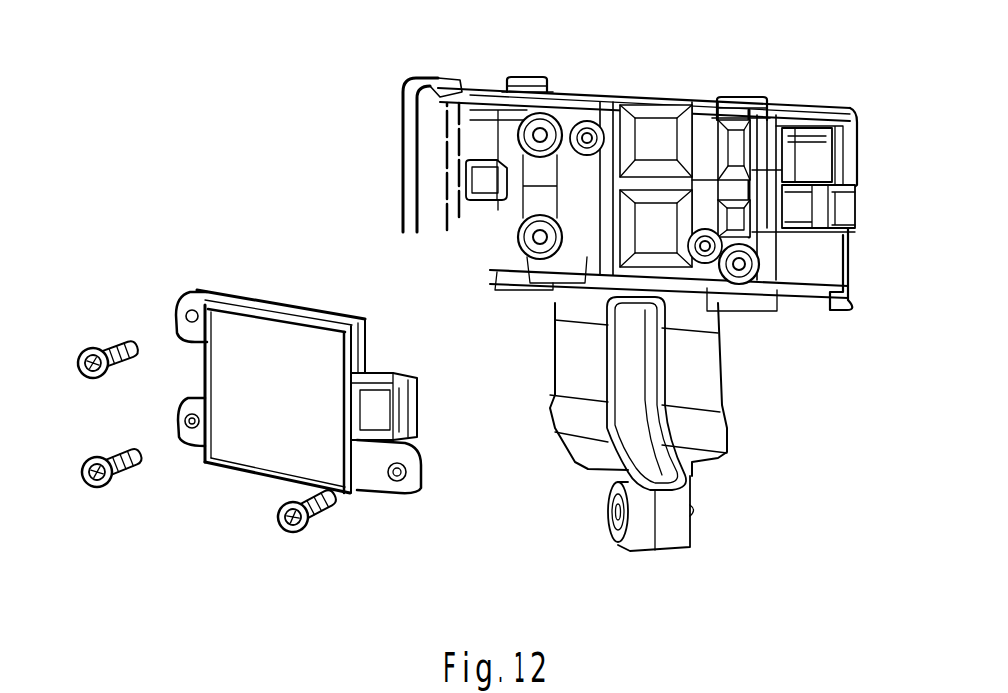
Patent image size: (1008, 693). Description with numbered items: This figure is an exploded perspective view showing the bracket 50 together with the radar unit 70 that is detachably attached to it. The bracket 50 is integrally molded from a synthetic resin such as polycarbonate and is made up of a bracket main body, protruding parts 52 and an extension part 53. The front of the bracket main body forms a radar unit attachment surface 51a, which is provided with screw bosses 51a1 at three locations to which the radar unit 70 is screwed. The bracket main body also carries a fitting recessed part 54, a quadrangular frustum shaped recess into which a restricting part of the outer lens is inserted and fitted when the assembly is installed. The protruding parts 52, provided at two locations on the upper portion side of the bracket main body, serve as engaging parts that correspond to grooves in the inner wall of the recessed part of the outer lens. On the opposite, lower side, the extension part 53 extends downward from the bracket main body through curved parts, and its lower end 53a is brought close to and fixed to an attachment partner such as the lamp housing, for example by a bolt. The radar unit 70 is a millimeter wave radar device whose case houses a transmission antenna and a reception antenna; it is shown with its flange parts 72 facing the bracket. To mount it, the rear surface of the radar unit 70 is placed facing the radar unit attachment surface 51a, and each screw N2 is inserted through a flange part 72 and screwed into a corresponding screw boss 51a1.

The bracket 50 is at (596, 96).
The radar unit attachment surface 51a is at (662, 148).
The screw boss 51a1 is at (518, 134).
The protruding part 52 is at (538, 78).
The extension part 53 is at (554, 367).
The lower end 53a is at (657, 553).
The fitting recessed part 54 is at (457, 178).
The radar unit 70 is at (305, 303).
The flange part 72 is at (190, 292).
The screw N2 is at (100, 345).